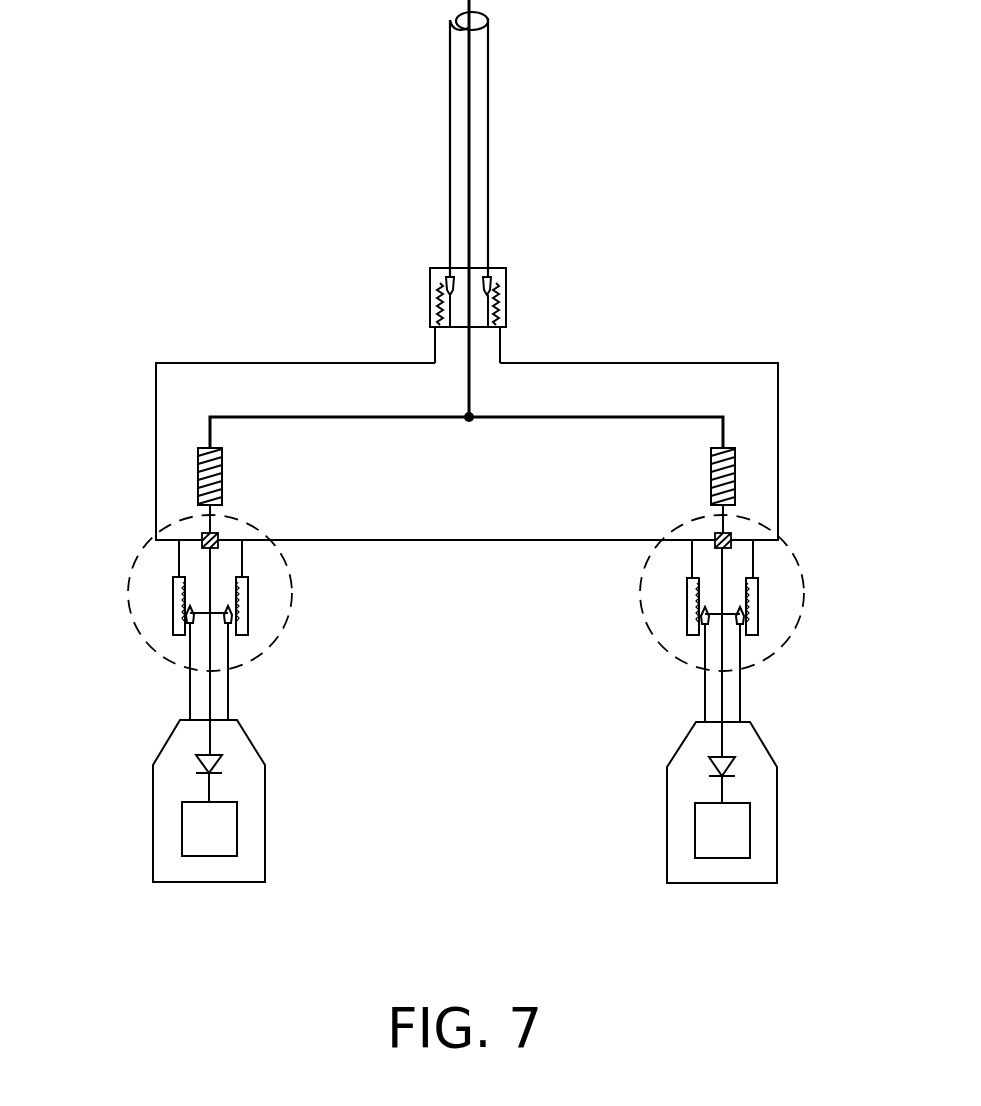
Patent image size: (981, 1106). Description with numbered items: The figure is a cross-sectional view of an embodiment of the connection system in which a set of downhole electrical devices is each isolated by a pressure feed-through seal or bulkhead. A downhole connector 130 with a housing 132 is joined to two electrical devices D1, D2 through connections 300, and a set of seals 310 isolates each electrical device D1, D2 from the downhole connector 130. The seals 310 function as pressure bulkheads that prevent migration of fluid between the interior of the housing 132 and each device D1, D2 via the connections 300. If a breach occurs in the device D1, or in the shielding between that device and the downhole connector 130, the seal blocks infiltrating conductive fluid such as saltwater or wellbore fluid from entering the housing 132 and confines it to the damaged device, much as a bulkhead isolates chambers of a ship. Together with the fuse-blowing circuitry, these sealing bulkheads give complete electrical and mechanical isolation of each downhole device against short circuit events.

The downhole connector 130 is at (786, 397).
The housing 132 is at (245, 380).
The seals 310 is at (190, 530).
The connections 300 is at (411, 636).
The electrical device D1 is at (272, 866).
The electrical device D2 is at (664, 866).